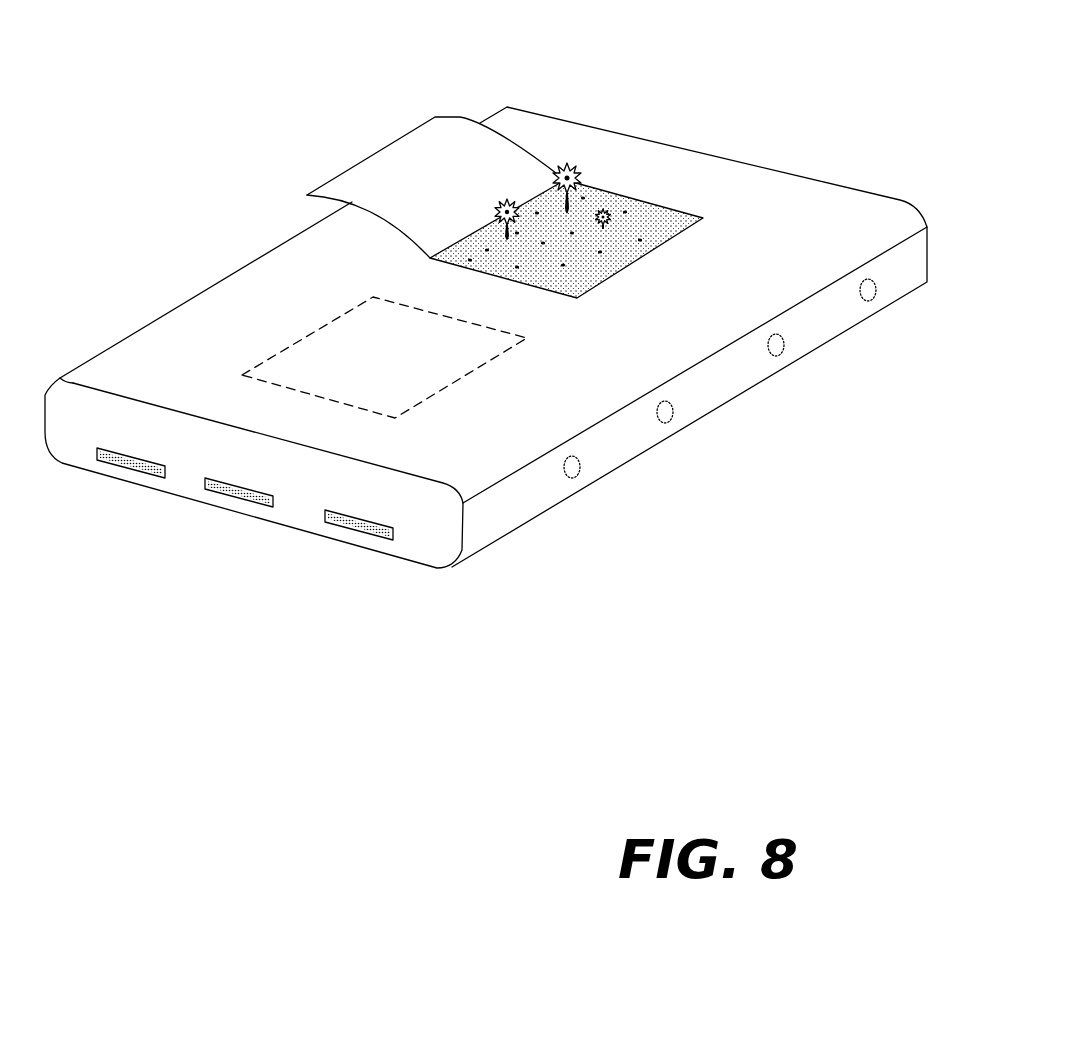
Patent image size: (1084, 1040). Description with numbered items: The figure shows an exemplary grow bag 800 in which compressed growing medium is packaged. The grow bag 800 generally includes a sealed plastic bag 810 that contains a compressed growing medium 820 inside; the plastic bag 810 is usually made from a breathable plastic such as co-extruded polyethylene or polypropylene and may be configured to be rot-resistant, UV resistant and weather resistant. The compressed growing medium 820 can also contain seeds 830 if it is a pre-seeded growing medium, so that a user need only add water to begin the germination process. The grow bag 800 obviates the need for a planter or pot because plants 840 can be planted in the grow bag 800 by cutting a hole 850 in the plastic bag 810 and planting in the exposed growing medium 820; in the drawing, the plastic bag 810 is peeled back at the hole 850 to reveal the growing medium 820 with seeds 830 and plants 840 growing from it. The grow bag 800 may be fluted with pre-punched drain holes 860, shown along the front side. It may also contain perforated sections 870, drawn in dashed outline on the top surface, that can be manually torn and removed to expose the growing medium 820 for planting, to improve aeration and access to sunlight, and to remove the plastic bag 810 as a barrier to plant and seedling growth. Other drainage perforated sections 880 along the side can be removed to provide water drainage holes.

The grow bag 800 is at (628, 62).
The plastic bag 810 is at (217, 283).
The compressed growing medium 820 is at (590, 268).
The seeds 830 is at (633, 233).
The plants 840 is at (606, 196).
The hole 850 is at (453, 275).
The pre-punched drain holes 860 is at (232, 495).
The perforated sections 870 is at (388, 363).
The drainage perforated sections 880 is at (672, 415).